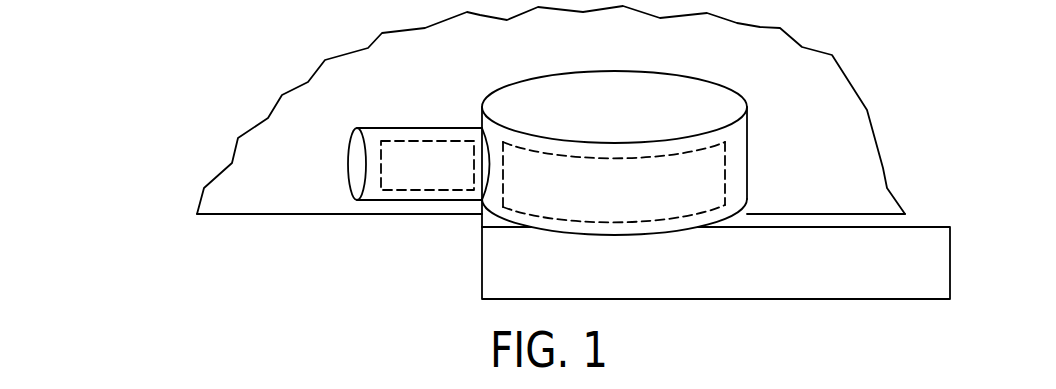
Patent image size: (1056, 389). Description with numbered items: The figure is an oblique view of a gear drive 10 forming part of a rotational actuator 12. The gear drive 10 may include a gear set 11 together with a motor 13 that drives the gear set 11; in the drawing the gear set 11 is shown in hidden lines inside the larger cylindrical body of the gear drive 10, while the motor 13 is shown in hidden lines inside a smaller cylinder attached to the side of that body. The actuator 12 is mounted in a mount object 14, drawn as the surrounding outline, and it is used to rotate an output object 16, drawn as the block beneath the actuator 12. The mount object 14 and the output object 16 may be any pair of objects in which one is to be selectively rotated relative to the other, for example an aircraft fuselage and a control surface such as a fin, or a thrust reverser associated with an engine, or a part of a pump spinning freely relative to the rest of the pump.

The gear drive 10 is at (530, 112).
The gear set 11 is at (697, 197).
The rotational actuator 12 is at (463, 102).
The motor 13 is at (420, 173).
The mount object 14 is at (840, 140).
The output object 16 is at (918, 258).